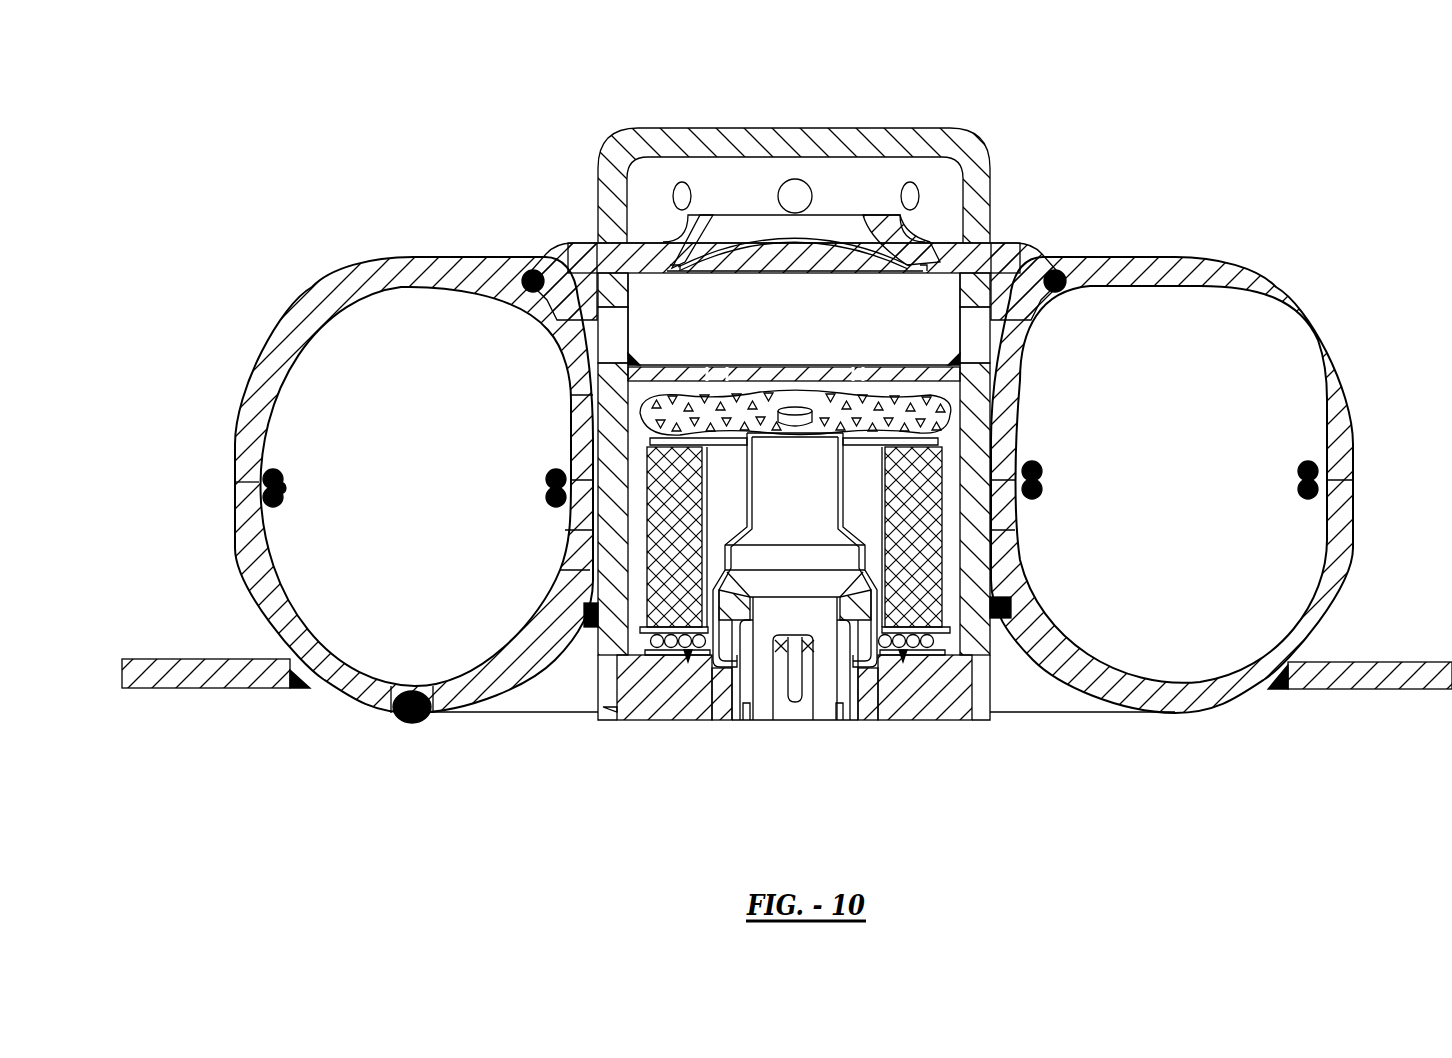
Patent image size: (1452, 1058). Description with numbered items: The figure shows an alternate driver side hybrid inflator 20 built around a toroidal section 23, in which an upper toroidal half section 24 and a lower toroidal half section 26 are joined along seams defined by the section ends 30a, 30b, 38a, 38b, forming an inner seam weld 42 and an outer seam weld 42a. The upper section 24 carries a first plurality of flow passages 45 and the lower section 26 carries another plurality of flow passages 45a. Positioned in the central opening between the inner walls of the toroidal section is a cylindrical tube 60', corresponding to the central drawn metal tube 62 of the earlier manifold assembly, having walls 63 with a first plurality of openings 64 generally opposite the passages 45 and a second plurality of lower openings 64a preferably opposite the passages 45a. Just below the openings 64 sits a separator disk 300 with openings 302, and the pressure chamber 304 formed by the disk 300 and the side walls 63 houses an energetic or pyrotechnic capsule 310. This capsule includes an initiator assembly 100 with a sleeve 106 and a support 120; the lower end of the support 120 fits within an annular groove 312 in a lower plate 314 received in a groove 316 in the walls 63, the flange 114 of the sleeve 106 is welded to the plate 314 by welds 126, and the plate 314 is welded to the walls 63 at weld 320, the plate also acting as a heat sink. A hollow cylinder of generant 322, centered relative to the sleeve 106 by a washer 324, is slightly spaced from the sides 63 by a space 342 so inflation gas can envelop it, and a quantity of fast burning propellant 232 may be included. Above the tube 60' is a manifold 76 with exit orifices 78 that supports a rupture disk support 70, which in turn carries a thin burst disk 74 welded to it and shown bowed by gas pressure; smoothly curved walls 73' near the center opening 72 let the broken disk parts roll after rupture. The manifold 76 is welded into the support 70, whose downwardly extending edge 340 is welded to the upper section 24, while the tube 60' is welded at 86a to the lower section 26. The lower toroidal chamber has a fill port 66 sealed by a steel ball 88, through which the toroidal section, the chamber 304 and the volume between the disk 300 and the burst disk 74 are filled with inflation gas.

The driver side hybrid inflator 20 is at (310, 206).
The toroidal section 23 is at (260, 346).
The upper toroidal half section 24 is at (230, 469).
The lower toroidal half section 26 is at (238, 547).
The section end 30a is at (246, 457).
The section end 30b is at (246, 511).
The section end 38a is at (1352, 467).
The section end 38b is at (1040, 462).
The inner seam weld 42 is at (548, 492).
The outer seam weld 42a is at (283, 472).
The flow passages 45 is at (548, 374).
The flow passages 45a is at (567, 562).
The cylindrical tube 60' is at (543, 708).
The central drawn metal tube 62 is at (963, 290).
The tube walls 63 is at (591, 434).
The openings 64 is at (617, 337).
The lower openings 64a is at (1008, 548).
The fill port 66 is at (421, 688).
The rupture disk support 70 is at (1020, 240).
The central opening 72 is at (738, 233).
The smoothly curved walls 73' is at (806, 167).
The burst disk 74 is at (826, 240).
The manifold 76 is at (640, 120).
The exit openings 78 is at (692, 206).
The weld 86a is at (1005, 625).
The steel ball 88 is at (408, 724).
The initiator assembly 100 is at (760, 720).
The sleeve 106 is at (848, 500).
The flange 114 is at (893, 663).
The support 120 is at (870, 720).
The welds 126 is at (927, 663).
The fast burning propellant 232 is at (990, 404).
The separator disk 300 is at (783, 372).
The openings 302 is at (873, 375).
The pressure chamber 304 is at (728, 400).
The pyrotechnic capsule 310 is at (688, 662).
The annular groove 312 is at (707, 670).
The lower plate 314 is at (667, 687).
The groove 316 is at (987, 683).
The weld 320 is at (593, 717).
The generant 322 is at (721, 526).
The washer 324 is at (727, 447).
The downwardly extending edge 340 is at (568, 275).
The space 342 is at (990, 436).